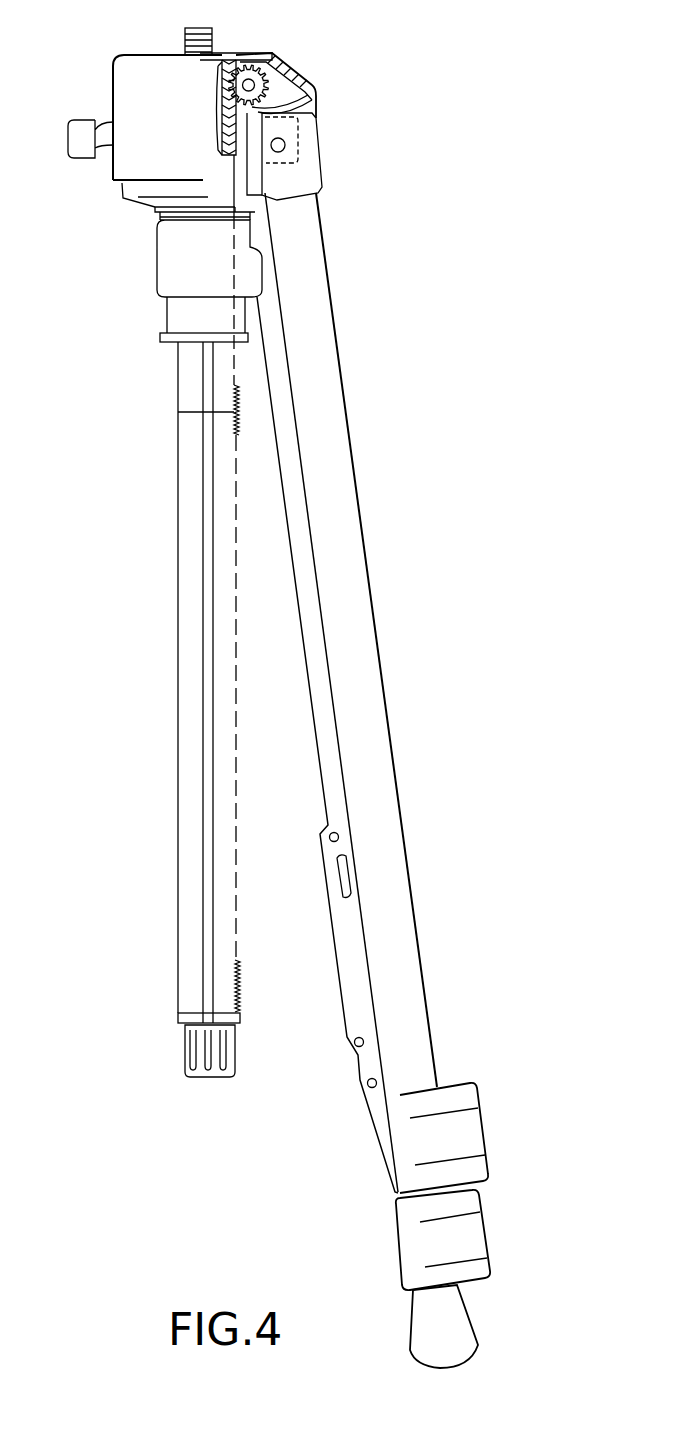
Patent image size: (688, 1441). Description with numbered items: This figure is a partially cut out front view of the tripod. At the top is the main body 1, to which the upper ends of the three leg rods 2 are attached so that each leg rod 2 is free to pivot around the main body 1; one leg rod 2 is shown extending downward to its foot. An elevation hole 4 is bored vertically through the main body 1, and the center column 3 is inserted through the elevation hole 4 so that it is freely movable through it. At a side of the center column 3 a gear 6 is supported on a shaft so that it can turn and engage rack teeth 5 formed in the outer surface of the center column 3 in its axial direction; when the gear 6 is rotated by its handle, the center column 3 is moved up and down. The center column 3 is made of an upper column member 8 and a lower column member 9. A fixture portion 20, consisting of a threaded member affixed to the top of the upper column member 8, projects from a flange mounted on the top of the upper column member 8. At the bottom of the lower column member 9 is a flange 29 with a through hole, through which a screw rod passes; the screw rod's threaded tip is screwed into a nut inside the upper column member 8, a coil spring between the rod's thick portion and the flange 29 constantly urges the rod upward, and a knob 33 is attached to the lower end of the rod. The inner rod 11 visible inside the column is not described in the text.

The main body 1 is at (130, 162).
The leg rods 2 is at (353, 637).
The center column 3 is at (172, 657).
The elevation hole 4 is at (284, 90).
The rack teeth 5 is at (238, 424).
The gear 6 is at (243, 55).
The upper column member 8 is at (185, 385).
The lower column member 9 is at (185, 513).
The inner rod 11 is at (203, 760).
The fixture portion 20 is at (185, 33).
The flange 29 is at (178, 1025).
The knob 33 is at (237, 1060).